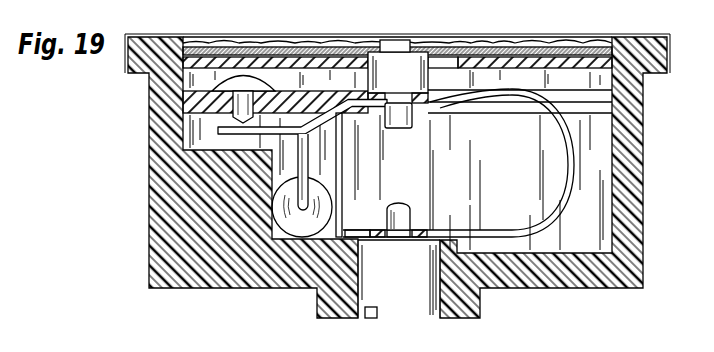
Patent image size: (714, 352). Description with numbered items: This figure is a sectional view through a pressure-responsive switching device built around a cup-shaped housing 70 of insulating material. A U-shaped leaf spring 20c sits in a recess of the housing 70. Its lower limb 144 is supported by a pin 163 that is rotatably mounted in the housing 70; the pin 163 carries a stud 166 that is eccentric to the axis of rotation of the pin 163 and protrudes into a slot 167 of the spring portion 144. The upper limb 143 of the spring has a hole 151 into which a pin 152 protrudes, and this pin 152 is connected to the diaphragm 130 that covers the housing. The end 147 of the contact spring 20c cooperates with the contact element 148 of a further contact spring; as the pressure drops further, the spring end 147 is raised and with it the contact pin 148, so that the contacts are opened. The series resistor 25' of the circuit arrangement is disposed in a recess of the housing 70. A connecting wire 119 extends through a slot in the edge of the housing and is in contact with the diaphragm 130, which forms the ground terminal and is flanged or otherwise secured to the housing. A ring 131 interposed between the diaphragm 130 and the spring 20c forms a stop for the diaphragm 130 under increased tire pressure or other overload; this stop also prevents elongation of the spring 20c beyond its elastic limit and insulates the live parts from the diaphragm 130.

The cup-shaped housing 70 is at (632, 271).
The diaphragm 130 is at (534, 40).
The ring 131 is at (584, 60).
The contact element 148 is at (238, 105).
The end of the contact spring 147 is at (222, 130).
The hole 151 is at (386, 102).
The pin 152 is at (400, 122).
The connecting wire 119 is at (306, 153).
The series resistor 25' is at (292, 249).
The upper limb 143 is at (457, 103).
The U-shaped leaf spring 20c is at (568, 165).
The lower limb 144 is at (518, 228).
The stud 166 is at (395, 215).
The slot 167 is at (411, 237).
The pin 163 is at (420, 295).